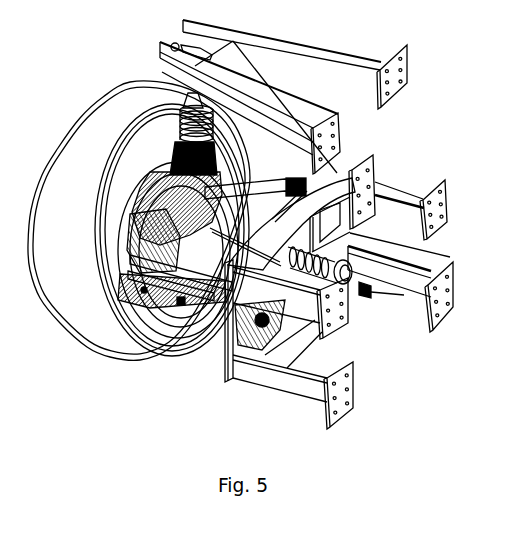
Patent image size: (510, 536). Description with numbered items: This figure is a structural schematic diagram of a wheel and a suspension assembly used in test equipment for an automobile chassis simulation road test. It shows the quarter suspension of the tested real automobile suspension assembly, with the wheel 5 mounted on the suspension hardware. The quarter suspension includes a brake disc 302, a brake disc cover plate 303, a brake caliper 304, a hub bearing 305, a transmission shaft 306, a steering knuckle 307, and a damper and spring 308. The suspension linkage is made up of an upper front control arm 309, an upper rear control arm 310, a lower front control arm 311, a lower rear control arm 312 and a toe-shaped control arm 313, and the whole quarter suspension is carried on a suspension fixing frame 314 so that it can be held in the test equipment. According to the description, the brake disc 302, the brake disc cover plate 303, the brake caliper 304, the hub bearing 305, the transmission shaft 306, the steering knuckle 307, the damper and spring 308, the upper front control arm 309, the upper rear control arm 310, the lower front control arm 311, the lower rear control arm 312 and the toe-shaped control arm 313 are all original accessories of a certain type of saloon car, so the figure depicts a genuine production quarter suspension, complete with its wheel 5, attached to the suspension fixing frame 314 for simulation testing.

The tire 5 is at (78, 292).
The brake disc 302 is at (140, 308).
The brake disc cover plate 303 is at (143, 294).
The brake caliper 304 is at (235, 138).
The hub bearing 305 is at (217, 247).
The transmission shaft 306 is at (157, 197).
The steering knuckle 307 is at (187, 231).
The damper and spring 308 is at (178, 146).
The upper front control arm 309 is at (303, 213).
The upper rear control arm 310 is at (280, 201).
The lower front control arm 311 is at (300, 241).
The lower rear control arm 312 is at (216, 258).
The toe-shaped control arm 313 is at (182, 305).
The suspension fixing frame 314 is at (408, 81).